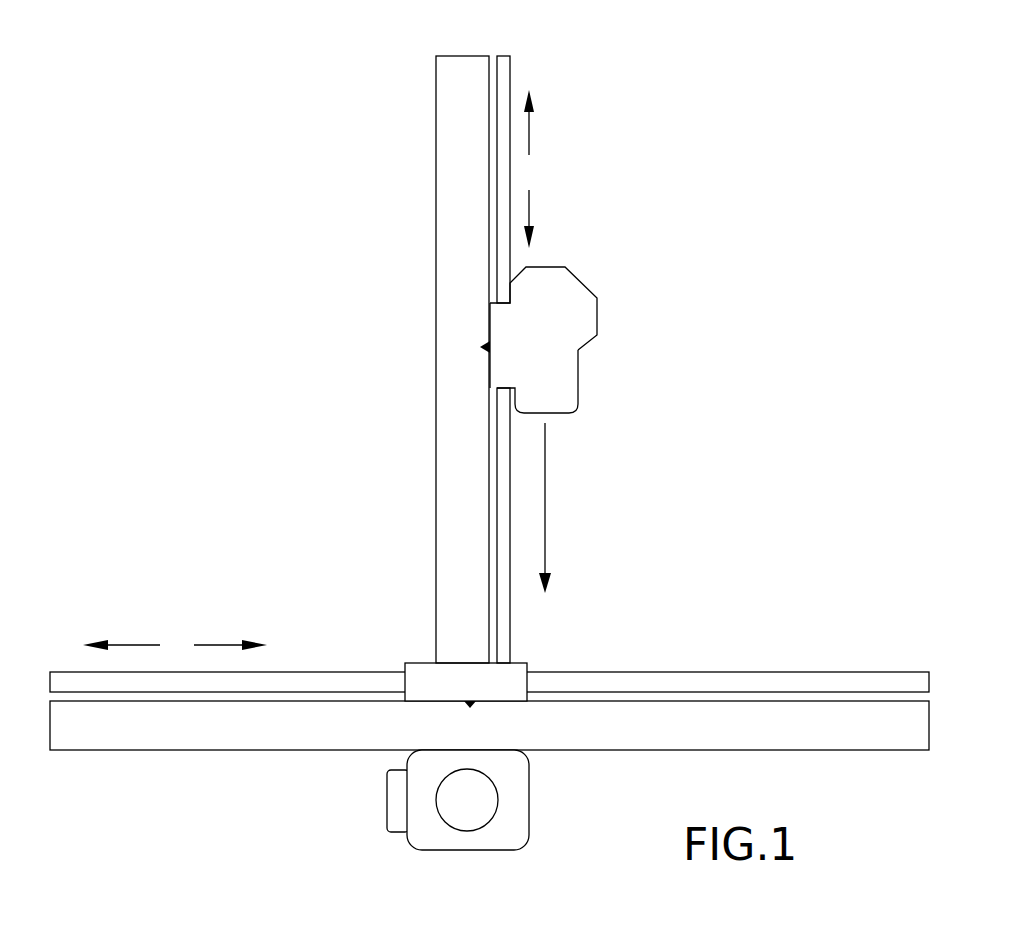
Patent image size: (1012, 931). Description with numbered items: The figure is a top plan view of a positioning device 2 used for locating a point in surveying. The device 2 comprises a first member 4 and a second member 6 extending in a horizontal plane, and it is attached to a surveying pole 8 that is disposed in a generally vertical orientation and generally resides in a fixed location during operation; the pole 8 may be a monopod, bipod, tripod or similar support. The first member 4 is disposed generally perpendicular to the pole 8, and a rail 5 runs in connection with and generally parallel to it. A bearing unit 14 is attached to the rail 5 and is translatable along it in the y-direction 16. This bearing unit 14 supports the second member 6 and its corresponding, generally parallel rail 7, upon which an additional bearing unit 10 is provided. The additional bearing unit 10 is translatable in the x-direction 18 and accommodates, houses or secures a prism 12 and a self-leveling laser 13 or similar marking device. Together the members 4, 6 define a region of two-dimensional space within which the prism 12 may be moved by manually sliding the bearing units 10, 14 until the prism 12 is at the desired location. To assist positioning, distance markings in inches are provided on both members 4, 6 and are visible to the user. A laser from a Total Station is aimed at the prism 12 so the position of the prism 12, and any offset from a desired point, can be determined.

The positioning device 2 is at (158, 451).
The first member 4 is at (858, 742).
The rail 5 is at (919, 680).
The second member 6 is at (458, 64).
The rail 7 is at (508, 72).
The surveying pole 8 is at (515, 836).
The additional bearing unit 10 is at (457, 321).
The prism 12 is at (598, 278).
The self-leveling laser 13 is at (597, 380).
The bearing unit 14 is at (525, 650).
The y-direction 16 is at (175, 646).
The x-direction 18 is at (530, 169).